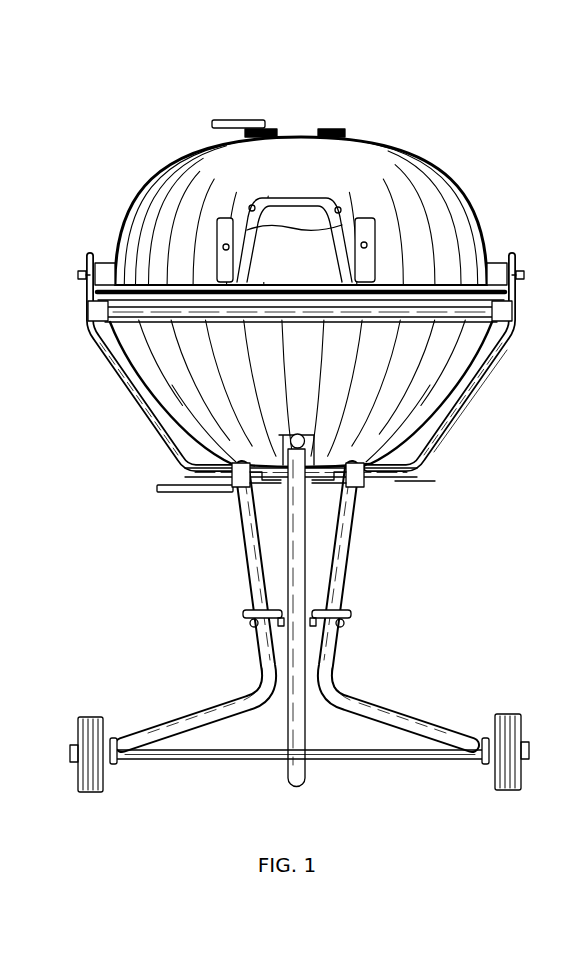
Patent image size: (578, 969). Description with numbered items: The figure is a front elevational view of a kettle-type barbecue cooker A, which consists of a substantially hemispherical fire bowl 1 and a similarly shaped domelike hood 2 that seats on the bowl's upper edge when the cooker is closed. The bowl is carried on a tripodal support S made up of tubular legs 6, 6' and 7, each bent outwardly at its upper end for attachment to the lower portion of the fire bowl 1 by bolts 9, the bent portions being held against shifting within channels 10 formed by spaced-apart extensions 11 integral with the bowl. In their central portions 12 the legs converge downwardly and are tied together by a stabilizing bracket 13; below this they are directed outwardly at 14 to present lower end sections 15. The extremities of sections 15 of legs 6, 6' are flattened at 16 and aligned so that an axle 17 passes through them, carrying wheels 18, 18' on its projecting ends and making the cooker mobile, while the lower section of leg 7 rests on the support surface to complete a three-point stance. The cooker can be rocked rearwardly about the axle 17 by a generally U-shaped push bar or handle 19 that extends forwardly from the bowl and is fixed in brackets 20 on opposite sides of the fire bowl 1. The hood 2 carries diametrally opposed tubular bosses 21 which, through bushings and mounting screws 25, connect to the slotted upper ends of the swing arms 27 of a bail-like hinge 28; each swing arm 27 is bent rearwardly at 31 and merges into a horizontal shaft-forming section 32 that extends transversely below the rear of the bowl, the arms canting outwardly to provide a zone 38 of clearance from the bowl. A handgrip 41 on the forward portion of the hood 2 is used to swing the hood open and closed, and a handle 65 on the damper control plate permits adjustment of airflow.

The barbecue cooker A is at (410, 152).
The fire bowl 1 is at (432, 410).
The hood 2 is at (428, 172).
The tripodal support S is at (312, 641).
The leg 6 is at (398, 606).
The leg 6' is at (196, 606).
The leg 7 is at (306, 540).
The bolts 9 is at (352, 494).
The channels 10 is at (357, 486).
The extensions 11 is at (366, 478).
The central portion of legs 12 is at (245, 594).
The stabilizing bracket 13 is at (345, 621).
The outwardly directed portion 14 is at (259, 683).
The lower end sections 15 is at (168, 720).
The flattened extremities 16 is at (115, 768).
The axle 17 is at (381, 762).
The wheel 18 is at (535, 771).
The wheel 18' is at (59, 774).
The push bar or handle 19 is at (118, 352).
The brackets 20 is at (88, 312).
The tubular bosses 21 is at (98, 258).
The mounting screw 25 is at (76, 274).
The swing arms 27 is at (440, 436).
The hinge 28 is at (438, 442).
The bend 31 is at (86, 337).
The shaft-forming section 32 is at (435, 481).
The zone of maximum clearance 38 is at (127, 323).
The handgrip 41 is at (328, 200).
The handle 65 is at (213, 121).